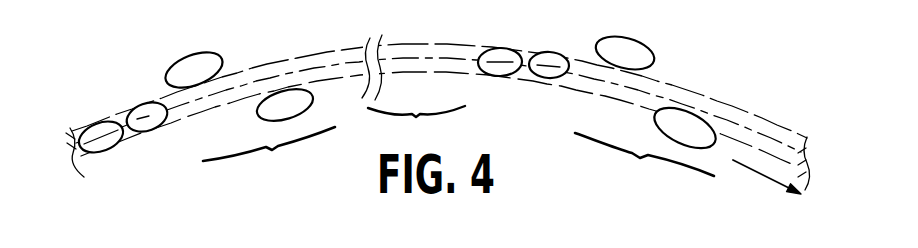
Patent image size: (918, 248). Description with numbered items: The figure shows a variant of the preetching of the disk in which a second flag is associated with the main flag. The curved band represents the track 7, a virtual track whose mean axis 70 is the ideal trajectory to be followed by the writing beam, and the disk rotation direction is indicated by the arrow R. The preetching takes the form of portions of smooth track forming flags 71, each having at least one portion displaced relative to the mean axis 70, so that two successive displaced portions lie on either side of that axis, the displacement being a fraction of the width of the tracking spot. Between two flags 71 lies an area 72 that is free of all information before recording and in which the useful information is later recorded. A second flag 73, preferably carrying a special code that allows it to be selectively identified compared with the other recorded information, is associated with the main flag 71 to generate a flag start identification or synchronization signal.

The track 7 is at (780, 128).
The mean axis 70 is at (407, 58).
The area 72 is at (413, 89).
The second flag 73 is at (140, 82).
The flag 71 is at (458, 158).
The arrow indicating disk rotation direction R is at (765, 192).